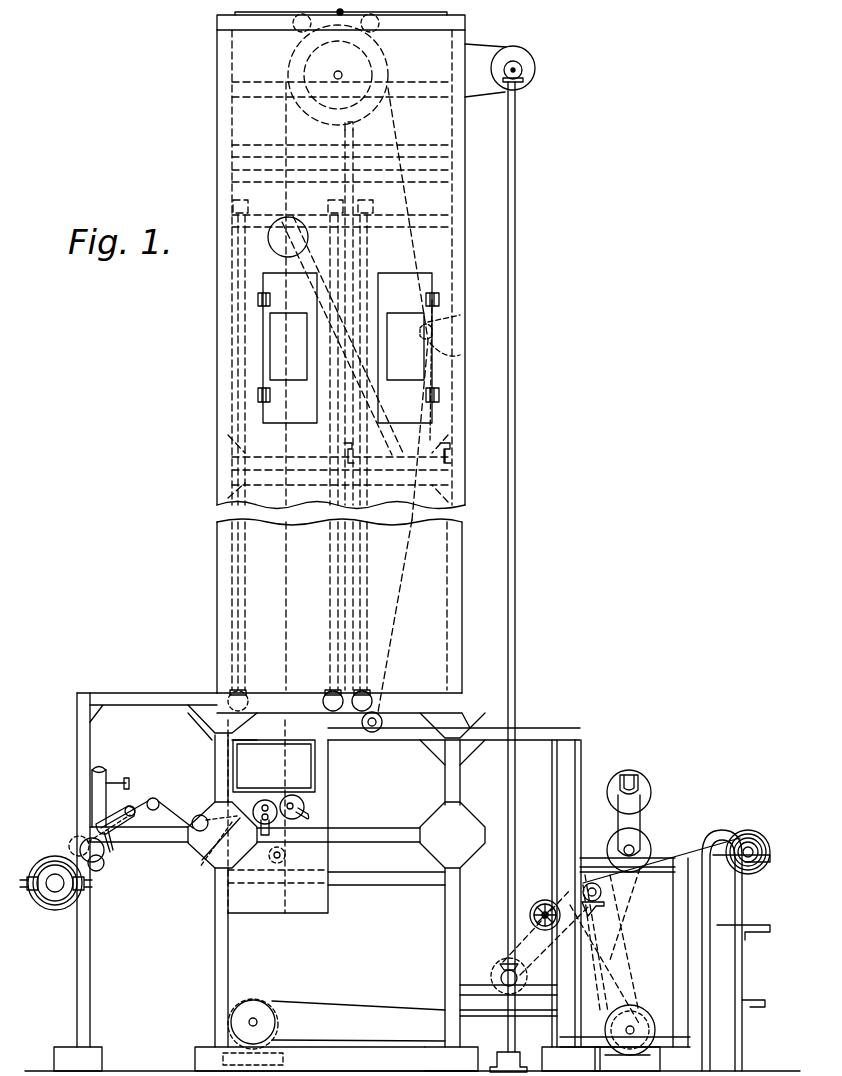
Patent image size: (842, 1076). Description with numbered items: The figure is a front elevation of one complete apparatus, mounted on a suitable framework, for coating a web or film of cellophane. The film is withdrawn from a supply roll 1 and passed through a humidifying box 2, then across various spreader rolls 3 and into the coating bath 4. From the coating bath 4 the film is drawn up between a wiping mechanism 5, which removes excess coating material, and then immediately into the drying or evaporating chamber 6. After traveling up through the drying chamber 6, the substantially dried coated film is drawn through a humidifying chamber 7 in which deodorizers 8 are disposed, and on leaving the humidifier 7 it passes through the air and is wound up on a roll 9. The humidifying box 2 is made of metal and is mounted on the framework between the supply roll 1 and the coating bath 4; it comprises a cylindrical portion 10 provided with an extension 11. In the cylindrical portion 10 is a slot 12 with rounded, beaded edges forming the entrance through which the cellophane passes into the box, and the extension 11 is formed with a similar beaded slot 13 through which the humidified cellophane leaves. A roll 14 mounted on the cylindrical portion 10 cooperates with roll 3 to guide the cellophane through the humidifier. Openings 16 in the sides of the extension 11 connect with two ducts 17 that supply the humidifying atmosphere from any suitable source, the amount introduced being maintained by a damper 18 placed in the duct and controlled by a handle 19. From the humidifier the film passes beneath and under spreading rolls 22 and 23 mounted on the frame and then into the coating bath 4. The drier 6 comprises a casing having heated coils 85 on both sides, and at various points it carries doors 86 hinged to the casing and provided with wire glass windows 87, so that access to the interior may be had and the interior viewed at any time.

The roll 1 is at (58, 902).
The humidifying box 2 is at (111, 815).
The spreader rolls 3 is at (155, 800).
The coating bath 4 is at (290, 858).
The wiping mechanism 5 is at (275, 805).
The drying chamber 6 is at (339, 625).
The humidifying chamber 7 is at (448, 213).
The deodorizers 8 is at (344, 449).
The roll 9 is at (752, 842).
The cylindrical portion 10 is at (93, 866).
The extension 11 is at (120, 828).
The slot 12 is at (78, 850).
The slot 13 is at (133, 812).
The roll 14 is at (82, 840).
The openings 16 is at (108, 836).
The ducts 17 is at (106, 758).
The damper 18 is at (93, 781).
The handle 19 is at (131, 784).
The spreading roll 22 is at (200, 818).
The spreading roll 23 is at (191, 902).
The heated coils 85 is at (365, 560).
The doors 86 is at (262, 311).
The wire glass windows 87 is at (280, 375).